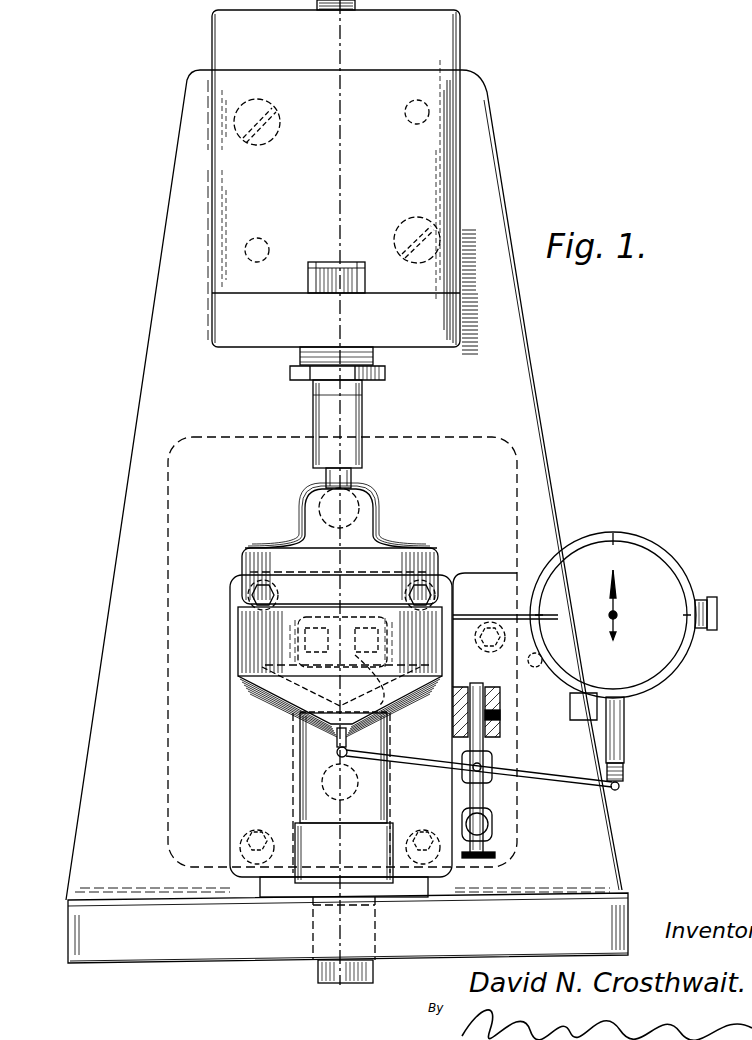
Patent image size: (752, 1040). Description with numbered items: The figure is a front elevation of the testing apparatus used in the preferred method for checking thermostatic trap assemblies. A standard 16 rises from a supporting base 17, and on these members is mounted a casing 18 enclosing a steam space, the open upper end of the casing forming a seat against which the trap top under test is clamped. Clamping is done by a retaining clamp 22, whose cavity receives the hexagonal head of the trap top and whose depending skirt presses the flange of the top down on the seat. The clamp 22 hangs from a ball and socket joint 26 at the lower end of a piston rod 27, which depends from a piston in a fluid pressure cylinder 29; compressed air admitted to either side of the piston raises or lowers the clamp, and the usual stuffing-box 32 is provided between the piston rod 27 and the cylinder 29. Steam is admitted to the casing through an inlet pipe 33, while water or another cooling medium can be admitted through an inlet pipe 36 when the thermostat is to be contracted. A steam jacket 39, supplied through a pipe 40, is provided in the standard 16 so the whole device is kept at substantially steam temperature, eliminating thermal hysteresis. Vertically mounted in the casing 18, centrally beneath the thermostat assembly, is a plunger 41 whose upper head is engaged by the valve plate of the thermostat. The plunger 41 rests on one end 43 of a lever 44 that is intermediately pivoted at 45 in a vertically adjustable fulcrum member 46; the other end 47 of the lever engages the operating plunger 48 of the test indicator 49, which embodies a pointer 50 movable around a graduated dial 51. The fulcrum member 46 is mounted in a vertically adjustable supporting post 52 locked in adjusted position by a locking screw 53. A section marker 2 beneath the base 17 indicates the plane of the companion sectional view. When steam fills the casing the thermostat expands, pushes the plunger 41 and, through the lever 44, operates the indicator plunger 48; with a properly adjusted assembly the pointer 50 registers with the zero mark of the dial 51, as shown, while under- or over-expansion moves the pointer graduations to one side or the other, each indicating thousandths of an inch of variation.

The section line 2 is at (367, 997).
The standard 16 is at (145, 356).
The supporting base 17 is at (68, 910).
The casing 18 is at (250, 684).
The retaining clamp 22 is at (276, 544).
The ball and socket joint 26 is at (326, 485).
The piston rod 27 is at (313, 408).
The fluid pressure cylinder 29 is at (235, 208).
The stuffing-box 32 is at (340, 349).
The inlet pipe 33 is at (300, 712).
The inlet pipe 36 is at (297, 788).
The steam jacket 39 is at (517, 457).
The pipe 40 is at (366, 480).
The plunger 41 is at (338, 735).
The end of lever 43 is at (338, 753).
The lever 44 is at (543, 781).
The pivot 45 is at (495, 787).
The fulcrum member 46 is at (497, 748).
The other end of lever 47 is at (620, 786).
The operating plunger 48 is at (627, 752).
The test indicator 49 is at (652, 540).
The pointer 50 is at (616, 583).
The graduated dial 51 is at (662, 568).
The supporting post 52 is at (497, 860).
The locking screw 53 is at (500, 717).